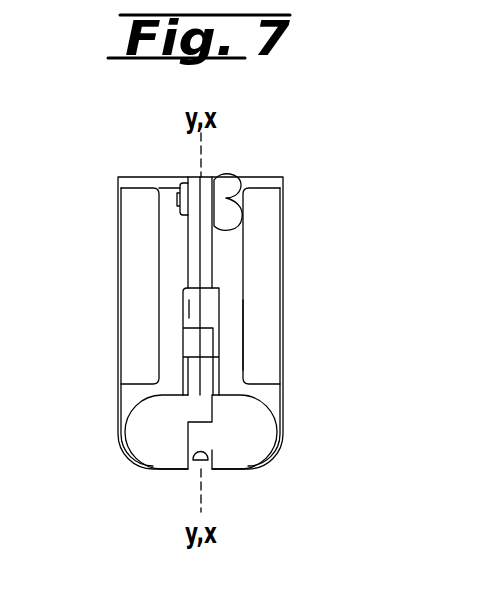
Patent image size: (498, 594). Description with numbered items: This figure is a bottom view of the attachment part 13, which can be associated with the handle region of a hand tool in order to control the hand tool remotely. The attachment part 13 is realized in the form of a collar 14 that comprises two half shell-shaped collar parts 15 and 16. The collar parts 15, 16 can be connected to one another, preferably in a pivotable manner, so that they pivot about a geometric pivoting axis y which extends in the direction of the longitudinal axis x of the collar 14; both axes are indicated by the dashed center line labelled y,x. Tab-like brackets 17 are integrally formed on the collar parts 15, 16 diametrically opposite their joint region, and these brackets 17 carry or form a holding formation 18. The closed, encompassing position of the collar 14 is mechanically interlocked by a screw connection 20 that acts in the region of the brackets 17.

The attachment part 13 is at (305, 177).
The collar 14 is at (266, 333).
The collar part 15 is at (133, 241).
The collar part 16 is at (265, 259).
The tab-like bracket 17 is at (210, 382).
The holding formation 18 is at (195, 317).
The screw connection 20 is at (224, 190).